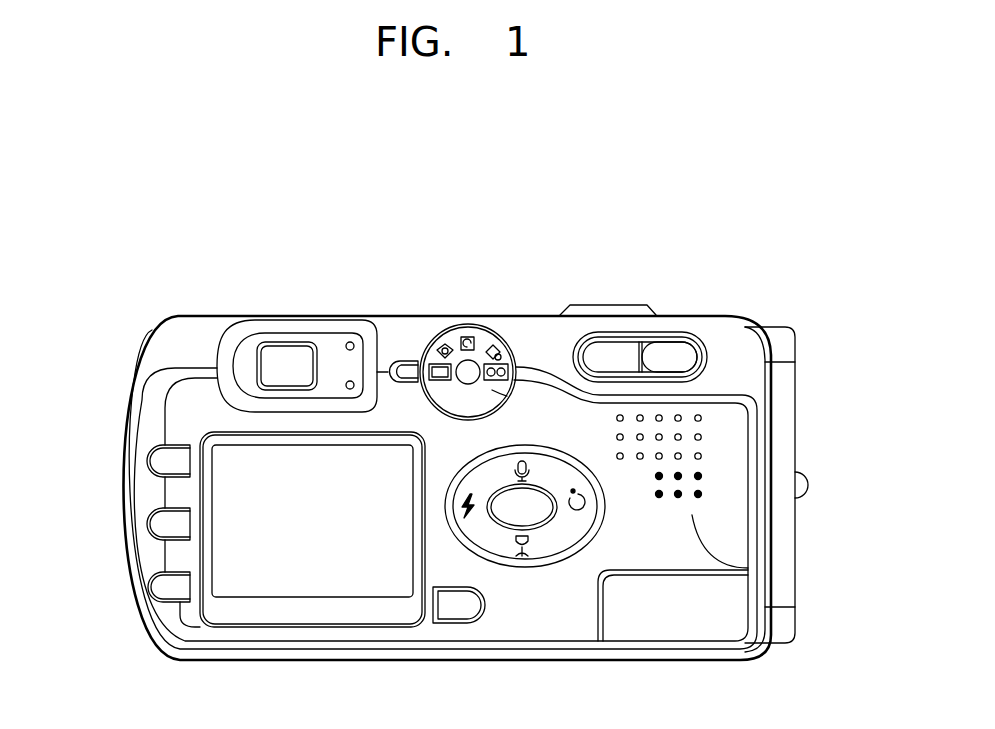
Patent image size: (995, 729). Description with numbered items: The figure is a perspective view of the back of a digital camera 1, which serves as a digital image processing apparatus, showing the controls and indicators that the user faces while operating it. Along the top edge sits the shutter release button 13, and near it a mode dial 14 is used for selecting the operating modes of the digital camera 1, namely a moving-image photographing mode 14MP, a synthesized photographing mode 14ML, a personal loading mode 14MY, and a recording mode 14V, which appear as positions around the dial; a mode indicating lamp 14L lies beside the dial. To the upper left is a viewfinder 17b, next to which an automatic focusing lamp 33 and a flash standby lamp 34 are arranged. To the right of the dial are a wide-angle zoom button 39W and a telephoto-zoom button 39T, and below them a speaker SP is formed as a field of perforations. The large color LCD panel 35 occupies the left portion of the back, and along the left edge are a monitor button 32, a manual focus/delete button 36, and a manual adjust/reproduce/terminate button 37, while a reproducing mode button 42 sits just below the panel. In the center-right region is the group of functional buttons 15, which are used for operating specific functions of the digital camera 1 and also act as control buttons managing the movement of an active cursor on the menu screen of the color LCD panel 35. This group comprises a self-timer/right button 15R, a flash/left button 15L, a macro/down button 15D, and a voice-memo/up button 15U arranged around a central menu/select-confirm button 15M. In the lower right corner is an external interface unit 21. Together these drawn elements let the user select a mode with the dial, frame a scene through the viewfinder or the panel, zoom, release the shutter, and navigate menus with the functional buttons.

The digital camera 1 is at (736, 248).
The shutter release button 13 is at (584, 305).
The mode dial 14 is at (475, 349).
The mode indicating lamp 14L is at (412, 370).
The moving-image photographing mode 14MP is at (505, 333).
The recording mode 14V is at (502, 365).
The synthesized photographing mode 14ML is at (428, 392).
The personal loading mode 14MY is at (512, 404).
The functional buttons 15 is at (552, 568).
The voice-memo/up button 15U is at (510, 467).
The flash/left button 15L is at (467, 513).
The self-timer/right button 15R is at (580, 504).
The menu/select-confirm button 15M is at (545, 513).
The macro/down button 15D is at (498, 568).
The viewfinder 17b is at (290, 352).
The external interface unit 21 is at (713, 622).
The monitor button 32 is at (152, 587).
The automatic focusing lamp 33 is at (350, 342).
The flash standby lamp 34 is at (355, 382).
The color LCD panel 35 is at (308, 577).
The manual focus/delete button 36 is at (152, 523).
The manual adjust/reproduce/terminate button 37 is at (152, 462).
The wide-angle zoom button 39W is at (605, 357).
The telephoto-zoom button 39T is at (670, 357).
The reproducing mode button 42 is at (450, 608).
The speaker SP is at (702, 476).